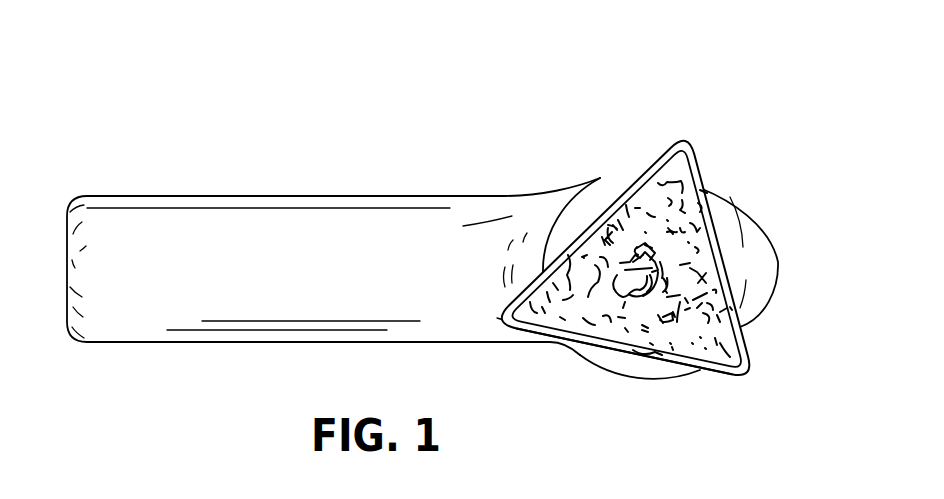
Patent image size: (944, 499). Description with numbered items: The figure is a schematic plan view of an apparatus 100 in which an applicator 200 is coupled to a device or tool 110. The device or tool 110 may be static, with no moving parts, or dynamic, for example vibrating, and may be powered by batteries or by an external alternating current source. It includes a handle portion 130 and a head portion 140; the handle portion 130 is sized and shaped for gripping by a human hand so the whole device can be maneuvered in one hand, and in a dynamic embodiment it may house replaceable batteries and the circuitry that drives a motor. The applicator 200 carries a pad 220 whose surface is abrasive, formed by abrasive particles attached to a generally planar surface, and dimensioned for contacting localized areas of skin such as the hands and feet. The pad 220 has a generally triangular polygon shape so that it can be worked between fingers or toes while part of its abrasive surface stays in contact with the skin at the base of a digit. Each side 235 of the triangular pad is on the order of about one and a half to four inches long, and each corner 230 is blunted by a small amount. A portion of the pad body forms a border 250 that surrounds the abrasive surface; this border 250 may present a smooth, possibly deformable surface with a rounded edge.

The apparatus 100 is at (463, 228).
The device or tool 110 is at (185, 196).
The handle portion 130 is at (297, 298).
The head portion 140 is at (763, 275).
The applicator 200 is at (673, 261).
The pad 220 is at (665, 185).
The corner 230 is at (752, 373).
The side 235 is at (705, 225).
The border 250 is at (702, 377).